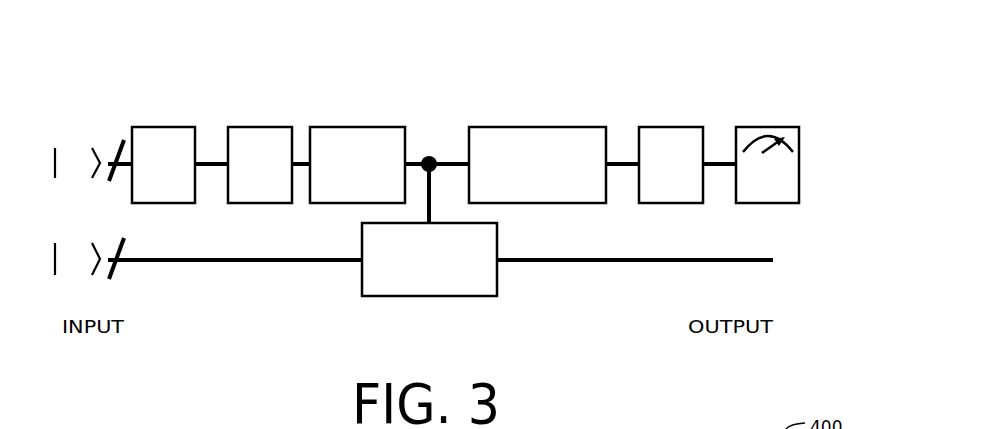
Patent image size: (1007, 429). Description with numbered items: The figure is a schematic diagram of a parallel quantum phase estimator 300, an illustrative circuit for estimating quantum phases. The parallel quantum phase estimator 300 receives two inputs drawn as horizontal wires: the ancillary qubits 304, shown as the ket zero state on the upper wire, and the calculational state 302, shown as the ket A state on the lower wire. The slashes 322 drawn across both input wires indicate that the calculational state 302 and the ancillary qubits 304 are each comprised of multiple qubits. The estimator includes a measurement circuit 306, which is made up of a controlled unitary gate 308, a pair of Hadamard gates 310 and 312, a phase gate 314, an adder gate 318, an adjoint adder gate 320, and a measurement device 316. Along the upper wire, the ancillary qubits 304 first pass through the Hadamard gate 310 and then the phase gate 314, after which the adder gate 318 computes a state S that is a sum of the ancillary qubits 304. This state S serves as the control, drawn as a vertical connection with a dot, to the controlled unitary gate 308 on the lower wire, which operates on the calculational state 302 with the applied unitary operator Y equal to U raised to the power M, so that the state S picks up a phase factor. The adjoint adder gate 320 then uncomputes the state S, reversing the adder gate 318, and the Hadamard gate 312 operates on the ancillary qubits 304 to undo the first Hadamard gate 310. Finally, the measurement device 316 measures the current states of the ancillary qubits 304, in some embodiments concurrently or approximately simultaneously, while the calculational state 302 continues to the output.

The parallel quantum phase estimator 300 is at (735, 73).
The calculational state 302 is at (91, 303).
The ancillary qubits 304 is at (92, 213).
The measurement circuit 306 is at (500, 106).
The controlled unitary gate 308 is at (446, 279).
The Hadamard gate 310 is at (180, 186).
The Hadamard gate 312 is at (688, 186).
The phase gate 314 is at (277, 186).
The measurement device 316 is at (785, 186).
The adder gate 318 is at (374, 186).
The adjoint adder gate 320 is at (554, 198).
The slashes 322 is at (120, 136).